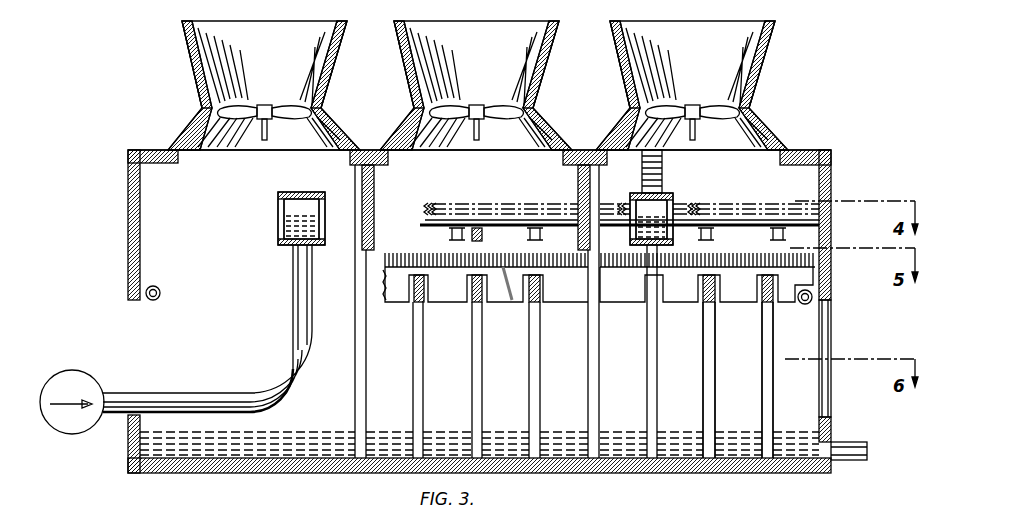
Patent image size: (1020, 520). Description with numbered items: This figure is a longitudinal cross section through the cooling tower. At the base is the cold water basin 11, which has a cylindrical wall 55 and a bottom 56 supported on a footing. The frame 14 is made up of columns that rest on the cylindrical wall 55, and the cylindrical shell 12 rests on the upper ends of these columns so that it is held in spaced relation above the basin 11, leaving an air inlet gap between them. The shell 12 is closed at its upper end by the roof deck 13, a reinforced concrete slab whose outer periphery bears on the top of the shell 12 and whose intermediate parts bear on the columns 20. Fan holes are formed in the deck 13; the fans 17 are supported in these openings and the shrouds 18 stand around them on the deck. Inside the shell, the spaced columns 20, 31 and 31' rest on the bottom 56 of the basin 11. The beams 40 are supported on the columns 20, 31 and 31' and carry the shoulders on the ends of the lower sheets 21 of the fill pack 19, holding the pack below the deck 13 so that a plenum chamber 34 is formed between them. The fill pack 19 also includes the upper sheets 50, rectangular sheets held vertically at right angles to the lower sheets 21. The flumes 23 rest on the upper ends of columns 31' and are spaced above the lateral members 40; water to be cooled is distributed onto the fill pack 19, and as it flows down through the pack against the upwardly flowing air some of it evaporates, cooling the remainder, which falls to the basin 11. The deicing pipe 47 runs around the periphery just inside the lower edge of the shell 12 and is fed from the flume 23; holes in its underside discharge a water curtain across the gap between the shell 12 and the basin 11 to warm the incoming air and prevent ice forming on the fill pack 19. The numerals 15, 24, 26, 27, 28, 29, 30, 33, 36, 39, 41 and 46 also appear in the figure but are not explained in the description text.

The basin 11 is at (121, 447).
The cylindrical shell 12 is at (831, 175).
The roof deck 13 is at (805, 150).
The frame 14 is at (831, 382).
The chamber 15 is at (511, 382).
The fan 17 is at (690, 104).
The shroud 18 is at (765, 82).
The fill pack 19 is at (463, 309).
The column 20 is at (355, 375).
The lower sheet 21 is at (490, 302).
The flume 23 is at (278, 226).
The cover plate 24 is at (300, 191).
The conduit 26 is at (293, 312).
The conduit 27 is at (212, 393).
The pump 28 is at (88, 372).
The filler duct 29 is at (662, 168).
The plate 30 is at (420, 225).
The column 31 is at (738, 380).
The column 31' is at (669, 351).
The plate 33 is at (690, 204).
The plenum chamber 34 is at (476, 174).
The partition 36 is at (375, 172).
The support 39 is at (483, 235).
The beam 40 is at (758, 302).
The outlet pipe 41 is at (858, 460).
The support 46 is at (722, 235).
The deicing pipe 47 is at (158, 298).
The upper sheet 50 is at (415, 253).
The cylindrical wall 55 is at (833, 432).
The bottom 56 is at (762, 473).